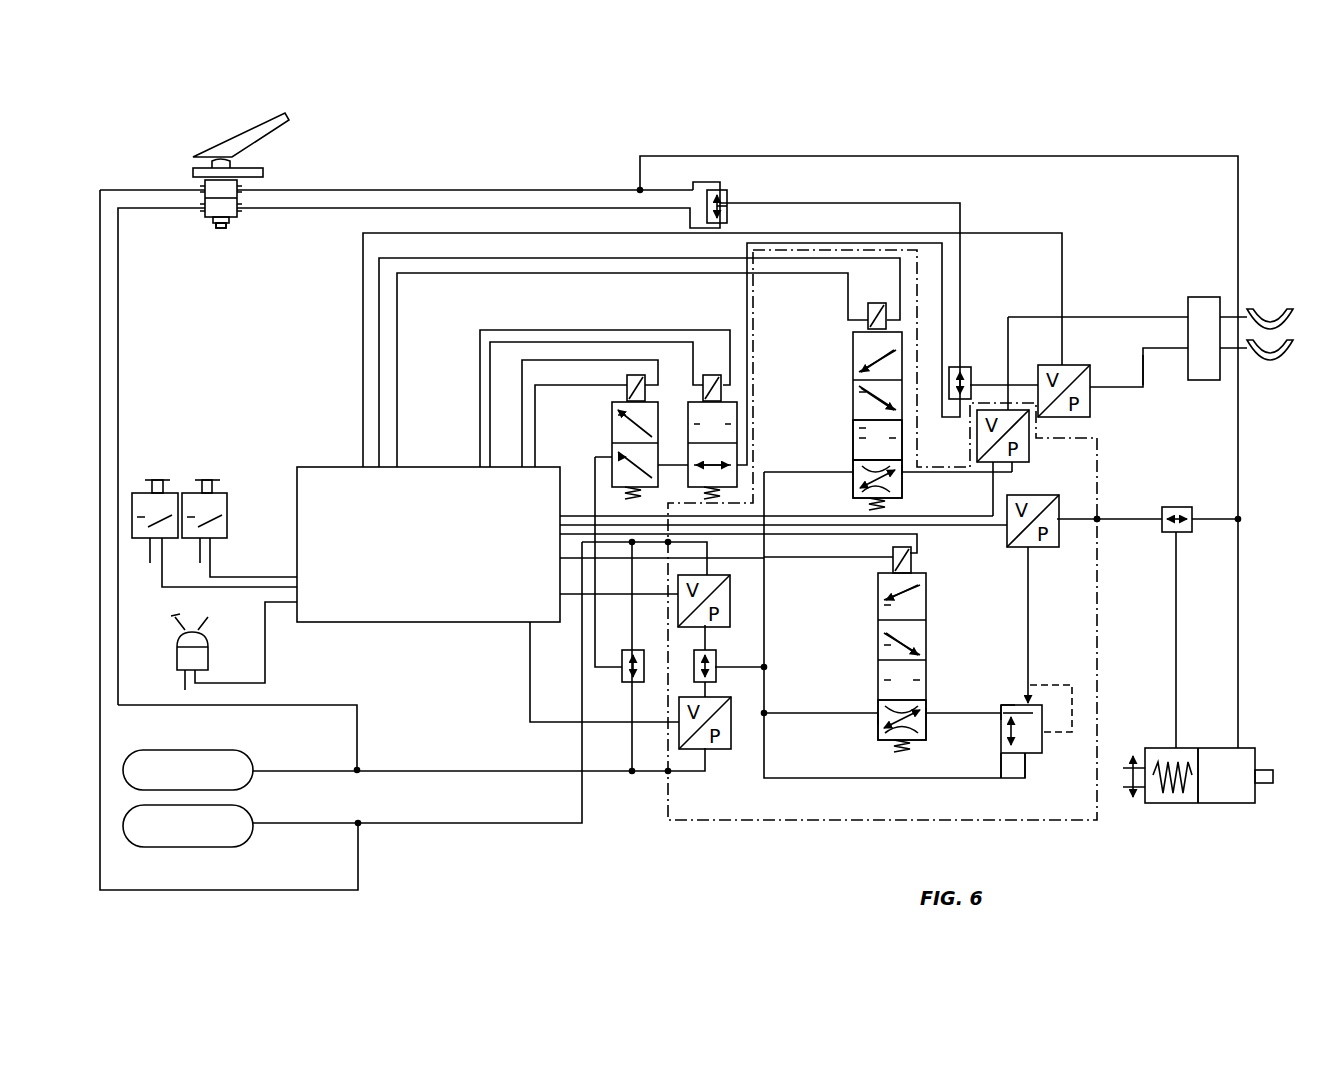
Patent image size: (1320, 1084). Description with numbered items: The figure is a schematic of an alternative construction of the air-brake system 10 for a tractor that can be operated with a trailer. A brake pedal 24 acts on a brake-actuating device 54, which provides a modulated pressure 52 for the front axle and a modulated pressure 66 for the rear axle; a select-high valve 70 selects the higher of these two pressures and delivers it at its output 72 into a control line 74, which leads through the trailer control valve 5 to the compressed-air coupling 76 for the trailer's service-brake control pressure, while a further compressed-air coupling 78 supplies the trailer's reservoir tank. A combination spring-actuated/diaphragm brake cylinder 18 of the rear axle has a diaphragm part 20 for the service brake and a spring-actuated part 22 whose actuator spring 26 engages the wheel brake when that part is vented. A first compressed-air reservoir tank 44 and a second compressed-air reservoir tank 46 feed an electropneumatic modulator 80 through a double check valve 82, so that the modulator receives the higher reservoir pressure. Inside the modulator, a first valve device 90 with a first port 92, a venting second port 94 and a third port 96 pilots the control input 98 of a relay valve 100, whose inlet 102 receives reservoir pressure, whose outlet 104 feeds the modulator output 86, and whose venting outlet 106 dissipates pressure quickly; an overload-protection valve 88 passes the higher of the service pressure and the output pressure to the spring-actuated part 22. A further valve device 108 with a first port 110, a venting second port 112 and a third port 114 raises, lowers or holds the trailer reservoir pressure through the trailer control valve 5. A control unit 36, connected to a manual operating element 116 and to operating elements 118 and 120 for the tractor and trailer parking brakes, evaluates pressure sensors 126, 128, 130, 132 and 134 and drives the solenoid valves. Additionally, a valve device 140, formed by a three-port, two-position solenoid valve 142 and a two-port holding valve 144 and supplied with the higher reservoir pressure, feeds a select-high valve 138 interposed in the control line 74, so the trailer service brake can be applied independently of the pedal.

The air-brake system 10 is at (1003, 106).
The brake cylinder 18 is at (1244, 746).
The diaphragm part 20 is at (1235, 800).
The spring-actuated part 22 is at (1170, 805).
The brake pedal 24 is at (246, 135).
The actuator spring 26 is at (1180, 762).
The control unit 36 is at (428, 544).
The first compressed-air reservoir tank 44 is at (250, 840).
The second compressed-air reservoir tank 46 is at (165, 750).
The modulated pressure 52 is at (235, 222).
The brake-actuating device 54 is at (183, 163).
The modulated pressure 66 is at (245, 187).
The select-high valve 70 is at (722, 194).
The output 72 is at (724, 210).
The control line 74 is at (1140, 372).
The trailer control valve 5 is at (1200, 297).
The compressed-air coupling 76 is at (1262, 365).
The compressed-air coupling 78 is at (1277, 314).
The electropneumatic modulator 80 is at (813, 824).
The double check valve 82 is at (694, 668).
The modulator output 86 is at (1097, 519).
The overload-protection valve 88 is at (1180, 507).
The first valve device 90 is at (912, 562).
The first port 92 is at (878, 712).
The second port 94 is at (874, 725).
The third port 96 is at (926, 716).
The control input 98 is at (1001, 710).
The relay valve 100 is at (1010, 704).
The inlet 102 is at (1040, 755).
The outlet 104 is at (1032, 692).
The venting outlet 106 is at (1010, 760).
The further valve device 108 is at (853, 336).
The first port 110 is at (853, 470).
The second port 112 is at (853, 487).
The third port 114 is at (902, 470).
The manual operating element 116 is at (208, 617).
The operating element 118 is at (155, 480).
The operating element 120 is at (208, 480).
The pressure sensor 126 is at (730, 608).
The pressure sensor 128 is at (731, 740).
The pressure sensor 130 is at (1068, 492).
The pressure sensor 132 is at (1027, 455).
The pressure sensor 134 is at (1090, 405).
The select-high valve 138 is at (966, 362).
The valve device 140 is at (658, 493).
The 3/2-way solenoid valve 142 is at (612, 405).
The holding valve 144 is at (702, 378).